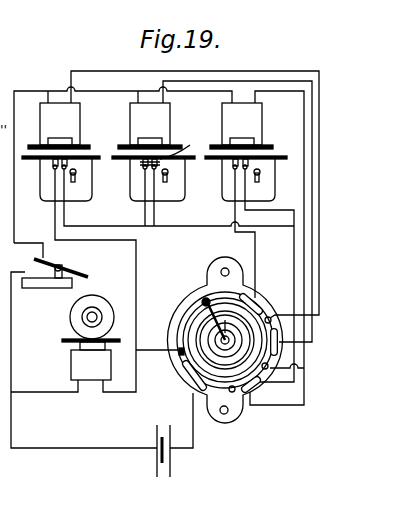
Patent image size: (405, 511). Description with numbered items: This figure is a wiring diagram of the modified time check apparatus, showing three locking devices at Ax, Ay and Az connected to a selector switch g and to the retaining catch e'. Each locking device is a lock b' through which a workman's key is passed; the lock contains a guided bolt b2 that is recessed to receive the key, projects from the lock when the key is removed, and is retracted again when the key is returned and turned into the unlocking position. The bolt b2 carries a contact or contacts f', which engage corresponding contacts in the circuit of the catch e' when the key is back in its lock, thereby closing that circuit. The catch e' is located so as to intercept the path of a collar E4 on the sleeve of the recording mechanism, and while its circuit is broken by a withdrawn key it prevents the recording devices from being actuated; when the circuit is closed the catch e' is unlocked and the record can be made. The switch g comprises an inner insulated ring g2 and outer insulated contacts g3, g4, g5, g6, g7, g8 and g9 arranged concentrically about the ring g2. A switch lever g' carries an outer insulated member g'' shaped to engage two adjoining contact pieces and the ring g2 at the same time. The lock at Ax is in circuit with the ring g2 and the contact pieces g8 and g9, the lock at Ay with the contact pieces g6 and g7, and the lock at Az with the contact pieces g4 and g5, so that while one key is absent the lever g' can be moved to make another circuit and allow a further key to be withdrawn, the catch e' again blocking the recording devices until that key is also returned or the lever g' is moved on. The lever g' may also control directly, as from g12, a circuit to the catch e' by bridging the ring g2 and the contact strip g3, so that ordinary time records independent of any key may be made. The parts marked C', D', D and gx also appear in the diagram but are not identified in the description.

The locking device Ax is at (58, 161).
The locking device Ay is at (151, 162).
The locking device Az is at (245, 160).
The relay coil C' is at (153, 131).
The lock b' is at (157, 180).
The bolt b2 is at (163, 158).
The contacts f' is at (148, 169).
The switch D' is at (55, 283).
The collar E4 is at (103, 306).
The retaining catch e' is at (79, 347).
The motor block D is at (91, 365).
The switch g is at (206, 340).
The inner insulated ring g2 is at (188, 316).
The contact strip g3 is at (191, 304).
The switch lever g' is at (220, 311).
The outer insulated member g'' is at (196, 283).
The direct control connection g12 is at (180, 352).
The slot contact gx is at (207, 390).
The outer insulated contact g9 is at (262, 305).
The outer insulated contact g8 is at (280, 310).
The outer insulated contact g7 is at (286, 338).
The outer insulated contact g6 is at (300, 360).
The outer insulated contact g5 is at (262, 390).
The outer insulated contact g4 is at (234, 392).